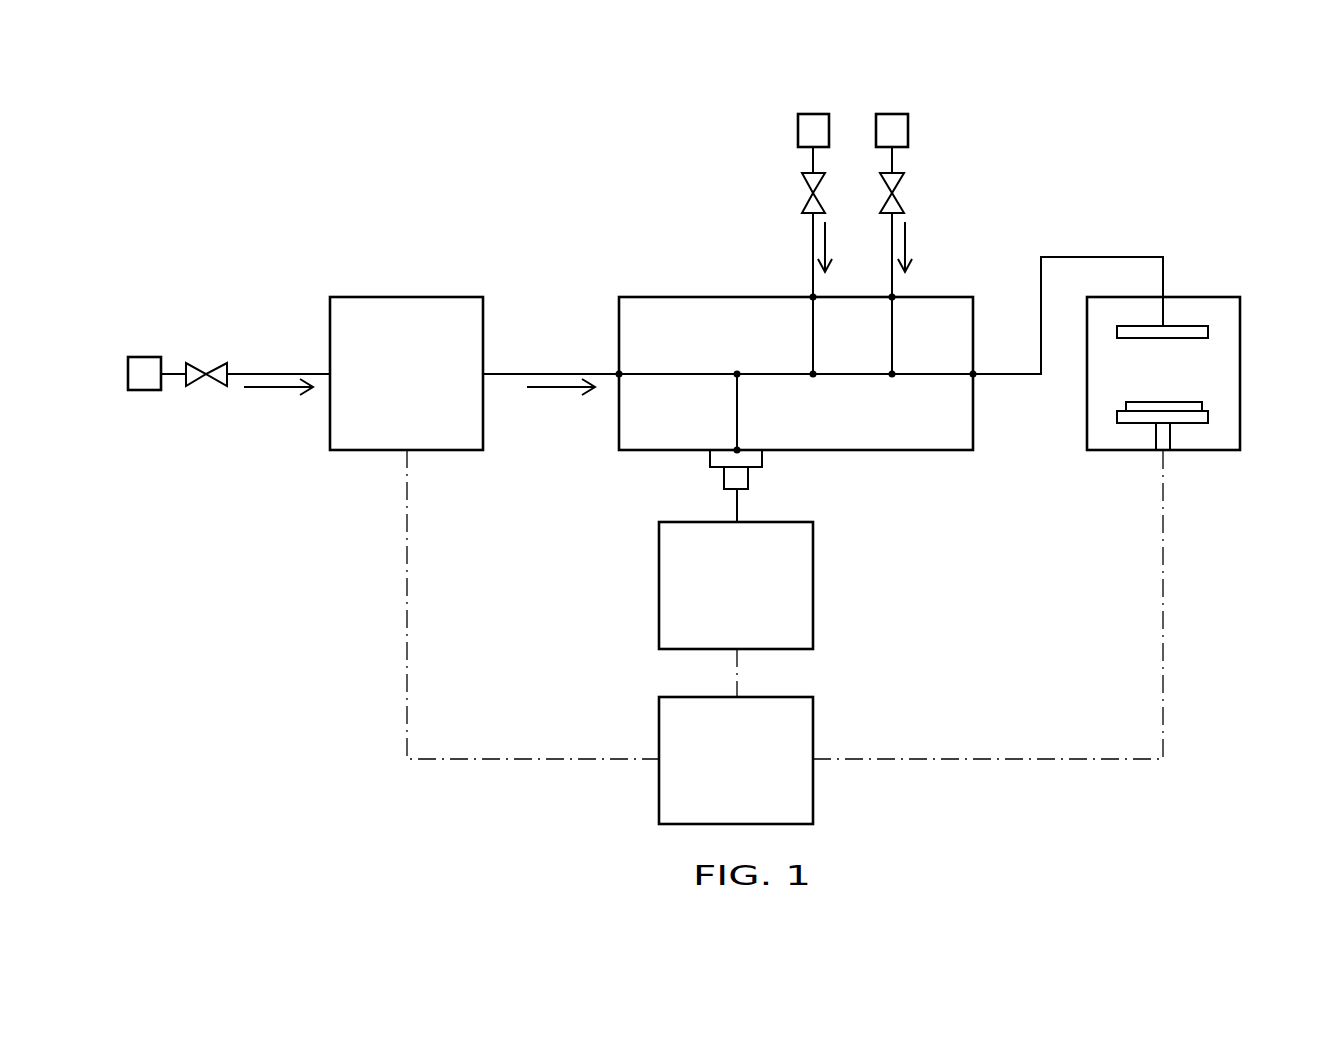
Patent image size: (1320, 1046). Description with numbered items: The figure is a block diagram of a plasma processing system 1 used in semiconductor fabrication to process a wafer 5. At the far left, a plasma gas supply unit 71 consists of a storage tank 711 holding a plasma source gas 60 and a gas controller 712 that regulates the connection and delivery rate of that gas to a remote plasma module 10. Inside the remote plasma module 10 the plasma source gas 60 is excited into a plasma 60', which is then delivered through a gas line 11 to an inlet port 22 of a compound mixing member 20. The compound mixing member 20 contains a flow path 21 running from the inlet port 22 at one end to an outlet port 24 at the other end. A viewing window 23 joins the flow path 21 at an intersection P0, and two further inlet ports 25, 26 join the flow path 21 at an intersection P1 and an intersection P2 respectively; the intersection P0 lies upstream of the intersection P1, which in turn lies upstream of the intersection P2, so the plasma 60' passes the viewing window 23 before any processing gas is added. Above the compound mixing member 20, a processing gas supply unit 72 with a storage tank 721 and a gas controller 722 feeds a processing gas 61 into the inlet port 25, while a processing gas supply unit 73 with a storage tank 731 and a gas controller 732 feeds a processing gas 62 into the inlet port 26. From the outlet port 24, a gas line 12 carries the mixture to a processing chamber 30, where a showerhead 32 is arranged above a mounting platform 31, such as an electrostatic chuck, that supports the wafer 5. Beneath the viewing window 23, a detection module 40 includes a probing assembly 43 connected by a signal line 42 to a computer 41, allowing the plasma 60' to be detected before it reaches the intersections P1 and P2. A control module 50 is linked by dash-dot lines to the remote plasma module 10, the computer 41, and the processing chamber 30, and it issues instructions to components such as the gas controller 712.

The plasma processing system 1 is at (246, 252).
The remote plasma module 10 is at (326, 290).
The gas line 11 is at (523, 371).
The gas line 12 is at (1012, 378).
The compound mixing member 20 is at (796, 353).
The flow path 21 is at (686, 372).
The inlet port 22 is at (617, 373).
The viewing window 23 is at (735, 452).
The outlet port 24 is at (975, 373).
The inlet port 25 is at (812, 296).
The inlet port 26 is at (891, 296).
The intersection P0 is at (738, 372).
The intersection P1 is at (813, 374).
The intersection P2 is at (892, 374).
The processing chamber 30 is at (1195, 328).
The mounting platform 31 is at (1163, 440).
The showerhead 32 is at (1208, 331).
The wafer 5 is at (1200, 406).
The detection module 40 is at (726, 549).
The computer 41 is at (806, 573).
The signal line 42 is at (742, 503).
The probing assembly 43 is at (755, 455).
The control module 50 is at (638, 722).
The plasma source gas 60 is at (278, 419).
The plasma 60' is at (561, 419).
The processing gas 61 is at (830, 243).
The processing gas 62 is at (908, 243).
The plasma gas supply unit 71 is at (211, 348).
The storage tank 711 is at (145, 392).
The gas controller 712 is at (207, 388).
The processing gas supply unit 72 is at (768, 174).
The storage tank 721 is at (797, 128).
The gas controller 722 is at (802, 185).
The processing gas supply unit 73 is at (906, 174).
The storage tank 731 is at (909, 128).
The gas controller 732 is at (905, 185).